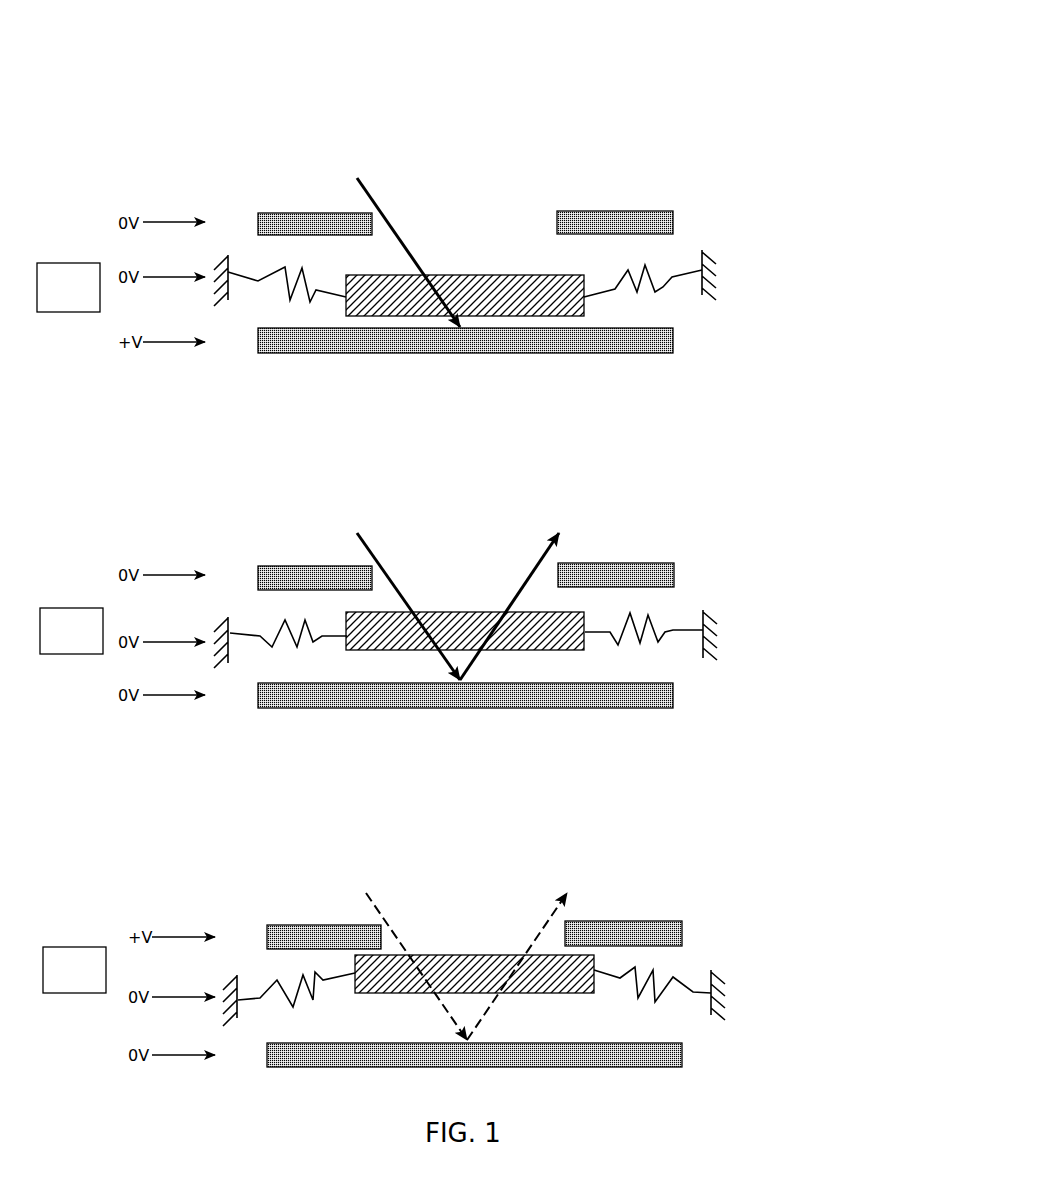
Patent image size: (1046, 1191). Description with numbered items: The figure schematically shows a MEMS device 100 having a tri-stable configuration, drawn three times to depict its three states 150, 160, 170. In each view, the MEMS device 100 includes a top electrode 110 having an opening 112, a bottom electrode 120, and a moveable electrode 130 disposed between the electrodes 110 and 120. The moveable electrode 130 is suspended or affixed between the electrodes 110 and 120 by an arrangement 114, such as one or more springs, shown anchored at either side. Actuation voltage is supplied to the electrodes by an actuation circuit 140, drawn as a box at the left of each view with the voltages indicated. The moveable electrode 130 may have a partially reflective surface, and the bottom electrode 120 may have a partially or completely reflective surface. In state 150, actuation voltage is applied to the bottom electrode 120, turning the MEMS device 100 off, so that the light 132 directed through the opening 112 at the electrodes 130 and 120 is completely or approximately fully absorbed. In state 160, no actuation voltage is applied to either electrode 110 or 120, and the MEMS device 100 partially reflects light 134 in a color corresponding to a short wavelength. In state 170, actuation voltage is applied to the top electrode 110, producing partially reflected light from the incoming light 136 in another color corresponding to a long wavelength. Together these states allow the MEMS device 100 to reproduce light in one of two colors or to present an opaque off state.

The MEMS device 100 is at (517, 58).
The top electrode 110 is at (289, 212).
The opening 112 is at (438, 215).
The arrangement 114 is at (250, 305).
The bottom electrode 120 is at (620, 350).
The moveable electrode 130 is at (508, 275).
The light 132 is at (375, 197).
The light 134 is at (367, 545).
The incoming light 136 is at (380, 905).
The actuation circuit 140 is at (95, 312).
The state 150 is at (750, 236).
The state 160 is at (775, 643).
The state 170 is at (772, 1007).